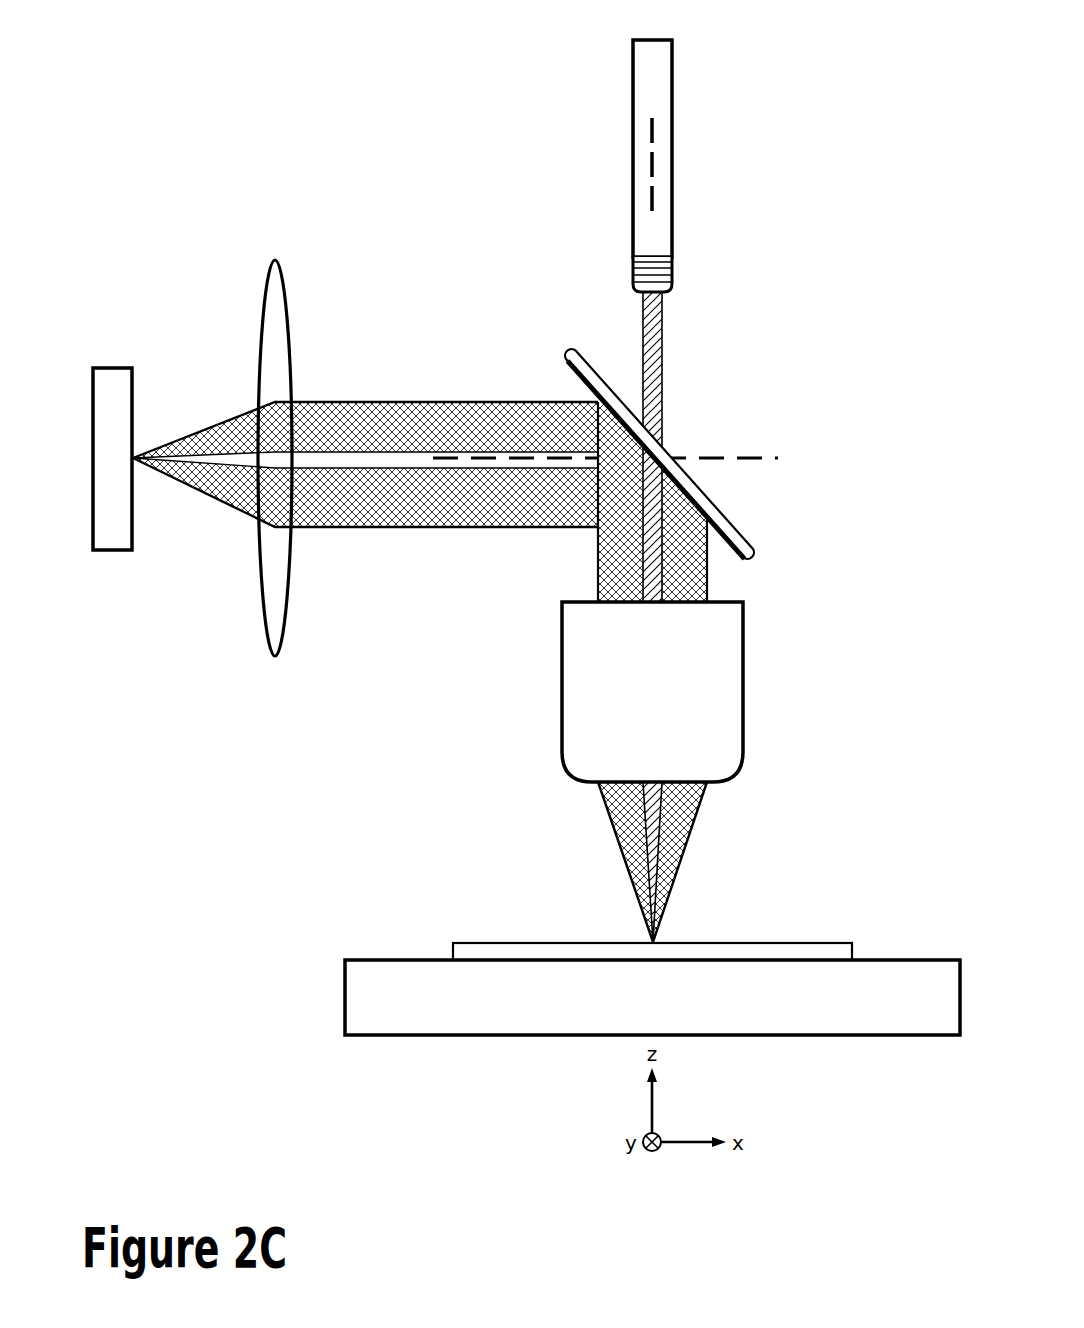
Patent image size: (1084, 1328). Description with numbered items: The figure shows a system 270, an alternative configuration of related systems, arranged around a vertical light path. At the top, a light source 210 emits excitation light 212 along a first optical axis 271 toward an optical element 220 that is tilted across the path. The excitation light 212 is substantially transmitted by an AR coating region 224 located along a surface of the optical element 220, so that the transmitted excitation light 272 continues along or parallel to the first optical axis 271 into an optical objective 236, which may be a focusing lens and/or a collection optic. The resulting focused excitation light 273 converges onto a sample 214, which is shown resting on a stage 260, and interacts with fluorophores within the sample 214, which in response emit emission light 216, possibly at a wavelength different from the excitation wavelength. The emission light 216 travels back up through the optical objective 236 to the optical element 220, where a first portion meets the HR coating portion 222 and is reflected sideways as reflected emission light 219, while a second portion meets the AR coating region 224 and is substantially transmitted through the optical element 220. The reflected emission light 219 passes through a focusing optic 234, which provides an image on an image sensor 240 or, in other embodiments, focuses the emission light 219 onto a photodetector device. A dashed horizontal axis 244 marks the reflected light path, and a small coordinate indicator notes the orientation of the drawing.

The light source 210 is at (633, 202).
The excitation light 212 is at (645, 355).
The sample 214 is at (535, 943).
The emission light 216 is at (598, 594).
The reflected emission light 219 is at (300, 402).
The optical element 220 is at (720, 505).
The HR coating portion 222 is at (568, 370).
The AR coating region 224 is at (643, 460).
The focusing optic 234 is at (258, 330).
The optical objective 236 is at (562, 677).
The image sensor 240 is at (113, 368).
The optical axis 244 is at (770, 458).
The stage 260 is at (345, 1002).
The system 270 is at (854, 116).
The first optical axis 271 is at (653, 157).
The transmitted excitation light 272 is at (642, 577).
The focused excitation light 273 is at (643, 830).